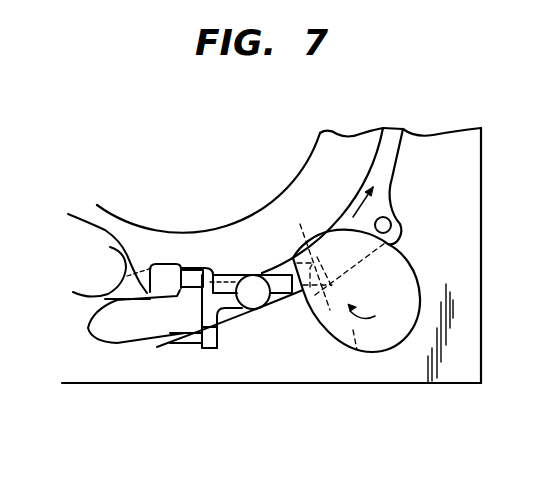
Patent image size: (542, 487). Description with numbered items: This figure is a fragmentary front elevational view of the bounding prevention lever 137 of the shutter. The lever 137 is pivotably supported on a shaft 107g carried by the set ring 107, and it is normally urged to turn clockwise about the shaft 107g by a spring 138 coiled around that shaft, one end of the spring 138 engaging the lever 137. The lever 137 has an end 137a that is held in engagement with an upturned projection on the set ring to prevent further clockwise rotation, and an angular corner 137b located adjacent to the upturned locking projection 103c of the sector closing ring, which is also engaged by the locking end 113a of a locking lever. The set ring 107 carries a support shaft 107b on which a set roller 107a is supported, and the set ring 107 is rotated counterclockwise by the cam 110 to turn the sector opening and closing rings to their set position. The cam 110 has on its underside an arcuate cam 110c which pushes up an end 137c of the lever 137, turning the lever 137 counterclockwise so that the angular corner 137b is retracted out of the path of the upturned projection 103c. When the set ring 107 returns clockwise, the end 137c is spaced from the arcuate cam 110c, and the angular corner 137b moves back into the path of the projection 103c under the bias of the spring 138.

The upturned locking projection 103c is at (175, 263).
The set ring 107 is at (268, 320).
The set roller 107a is at (391, 223).
The support shaft 107b is at (185, 347).
The shaft 107g is at (252, 228).
The cam 110 is at (412, 280).
The arcuate cam 110c is at (316, 310).
The locking end 113a is at (87, 251).
The bounding prevention lever 137 is at (227, 273).
The end 137a is at (206, 347).
The angular corner 137b is at (222, 272).
The end 137c is at (305, 256).
The spring 138 is at (243, 318).